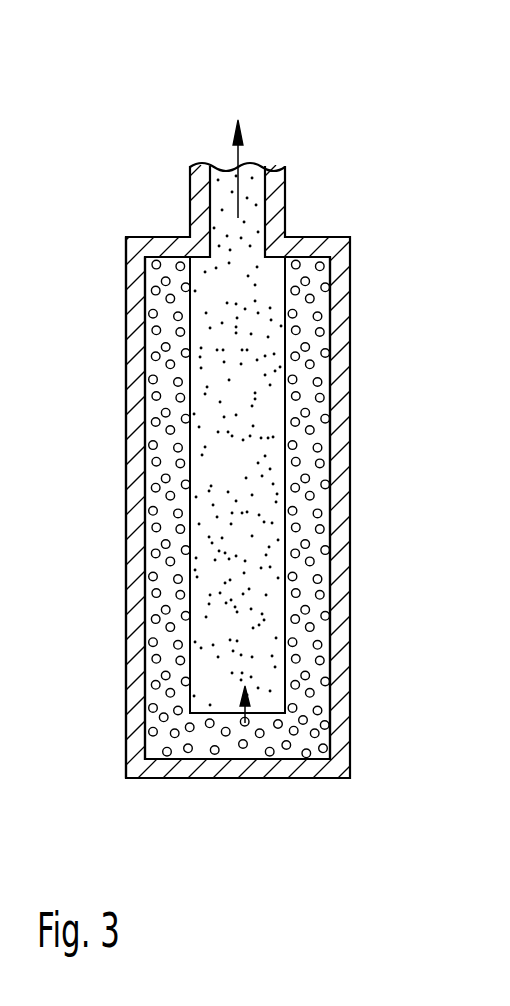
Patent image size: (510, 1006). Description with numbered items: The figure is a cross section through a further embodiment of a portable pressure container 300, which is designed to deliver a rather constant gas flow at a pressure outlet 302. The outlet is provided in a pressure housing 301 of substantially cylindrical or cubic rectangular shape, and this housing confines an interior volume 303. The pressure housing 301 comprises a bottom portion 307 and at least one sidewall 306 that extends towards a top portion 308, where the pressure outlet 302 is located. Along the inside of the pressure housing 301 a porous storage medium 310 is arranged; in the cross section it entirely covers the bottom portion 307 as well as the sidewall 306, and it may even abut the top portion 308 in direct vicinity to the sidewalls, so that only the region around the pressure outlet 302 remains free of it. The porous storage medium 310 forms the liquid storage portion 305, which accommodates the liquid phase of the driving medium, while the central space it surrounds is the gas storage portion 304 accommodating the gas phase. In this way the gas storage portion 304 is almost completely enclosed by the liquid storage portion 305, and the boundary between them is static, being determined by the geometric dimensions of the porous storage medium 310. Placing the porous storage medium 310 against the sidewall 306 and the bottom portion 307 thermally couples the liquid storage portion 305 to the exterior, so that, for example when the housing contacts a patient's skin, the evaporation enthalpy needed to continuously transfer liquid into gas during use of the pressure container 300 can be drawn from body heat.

The pressure container 300 is at (139, 108).
The pressure housing 301 is at (340, 302).
The pressure outlet 302 is at (276, 119).
The interior volume 303 is at (245, 723).
The gas storage portion 304 is at (268, 695).
The liquid storage portion 305 is at (305, 387).
The sidewall 306 is at (137, 482).
The bottom portion 307 is at (157, 767).
The top portion 308 is at (318, 247).
The porous storage medium 310 is at (325, 608).